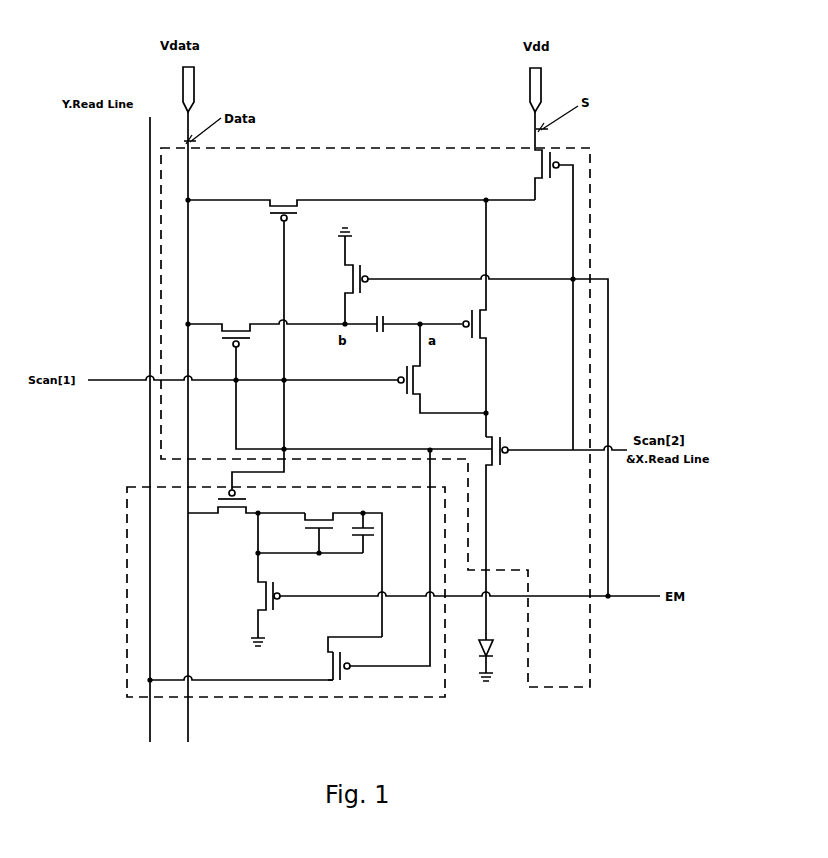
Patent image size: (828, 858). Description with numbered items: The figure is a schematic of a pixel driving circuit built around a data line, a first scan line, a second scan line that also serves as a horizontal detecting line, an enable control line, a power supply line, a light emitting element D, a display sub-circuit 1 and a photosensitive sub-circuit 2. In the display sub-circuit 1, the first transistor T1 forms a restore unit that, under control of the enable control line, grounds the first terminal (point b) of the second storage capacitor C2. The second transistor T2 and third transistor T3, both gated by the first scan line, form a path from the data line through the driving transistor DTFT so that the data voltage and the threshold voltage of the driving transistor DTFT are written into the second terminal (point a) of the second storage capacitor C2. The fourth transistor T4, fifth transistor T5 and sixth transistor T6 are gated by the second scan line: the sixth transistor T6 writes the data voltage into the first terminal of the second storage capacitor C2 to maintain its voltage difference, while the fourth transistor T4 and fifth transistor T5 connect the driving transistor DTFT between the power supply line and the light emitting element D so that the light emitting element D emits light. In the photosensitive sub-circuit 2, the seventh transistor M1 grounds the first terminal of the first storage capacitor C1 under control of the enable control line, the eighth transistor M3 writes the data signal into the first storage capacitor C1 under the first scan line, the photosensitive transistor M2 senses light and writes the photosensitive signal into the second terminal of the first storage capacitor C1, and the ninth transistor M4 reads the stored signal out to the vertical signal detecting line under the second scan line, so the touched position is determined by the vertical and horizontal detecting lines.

The display sub-circuit 1 is at (592, 199).
The photosensitive sub-circuit 2 is at (125, 532).
The first transistor T1 is at (347, 276).
The second transistor T2 is at (361, 200).
The third transistor T3 is at (442, 368).
The fourth transistor T4 is at (538, 156).
The fifth transistor T5 is at (505, 537).
The sixth transistor T6 is at (282, 327).
The driving transistor DTFT is at (494, 318).
The first storage capacitor C1 is at (357, 533).
The second storage capacitor C2 is at (416, 315).
The seventh transistor M1 is at (259, 579).
The photosensitive transistor M2 is at (343, 567).
The eighth transistor M3 is at (246, 511).
The ninth transistor M4 is at (355, 664).
The light emitting element D is at (491, 660).